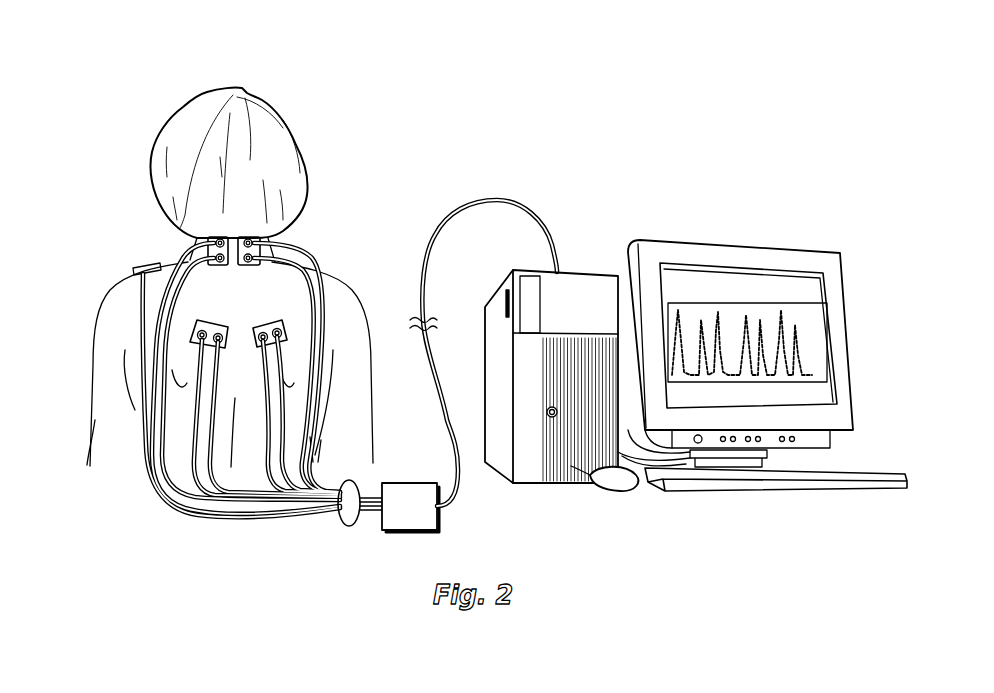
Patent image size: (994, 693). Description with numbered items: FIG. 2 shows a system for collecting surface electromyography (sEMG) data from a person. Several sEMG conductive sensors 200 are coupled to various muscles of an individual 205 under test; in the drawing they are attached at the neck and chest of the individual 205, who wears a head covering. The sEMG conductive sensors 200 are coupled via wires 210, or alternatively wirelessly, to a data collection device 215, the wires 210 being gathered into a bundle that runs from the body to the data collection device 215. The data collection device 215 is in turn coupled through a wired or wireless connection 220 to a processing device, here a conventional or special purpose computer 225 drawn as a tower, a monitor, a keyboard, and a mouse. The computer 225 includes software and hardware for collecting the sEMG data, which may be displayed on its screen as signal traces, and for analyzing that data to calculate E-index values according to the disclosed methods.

The sEMG conductive sensors 200 is at (200, 240).
The individual 205 is at (228, 86).
The wires 210 is at (349, 527).
The data collection device 215 is at (395, 518).
The wired or wireless connection 220 is at (440, 362).
The computer 225 is at (550, 485).